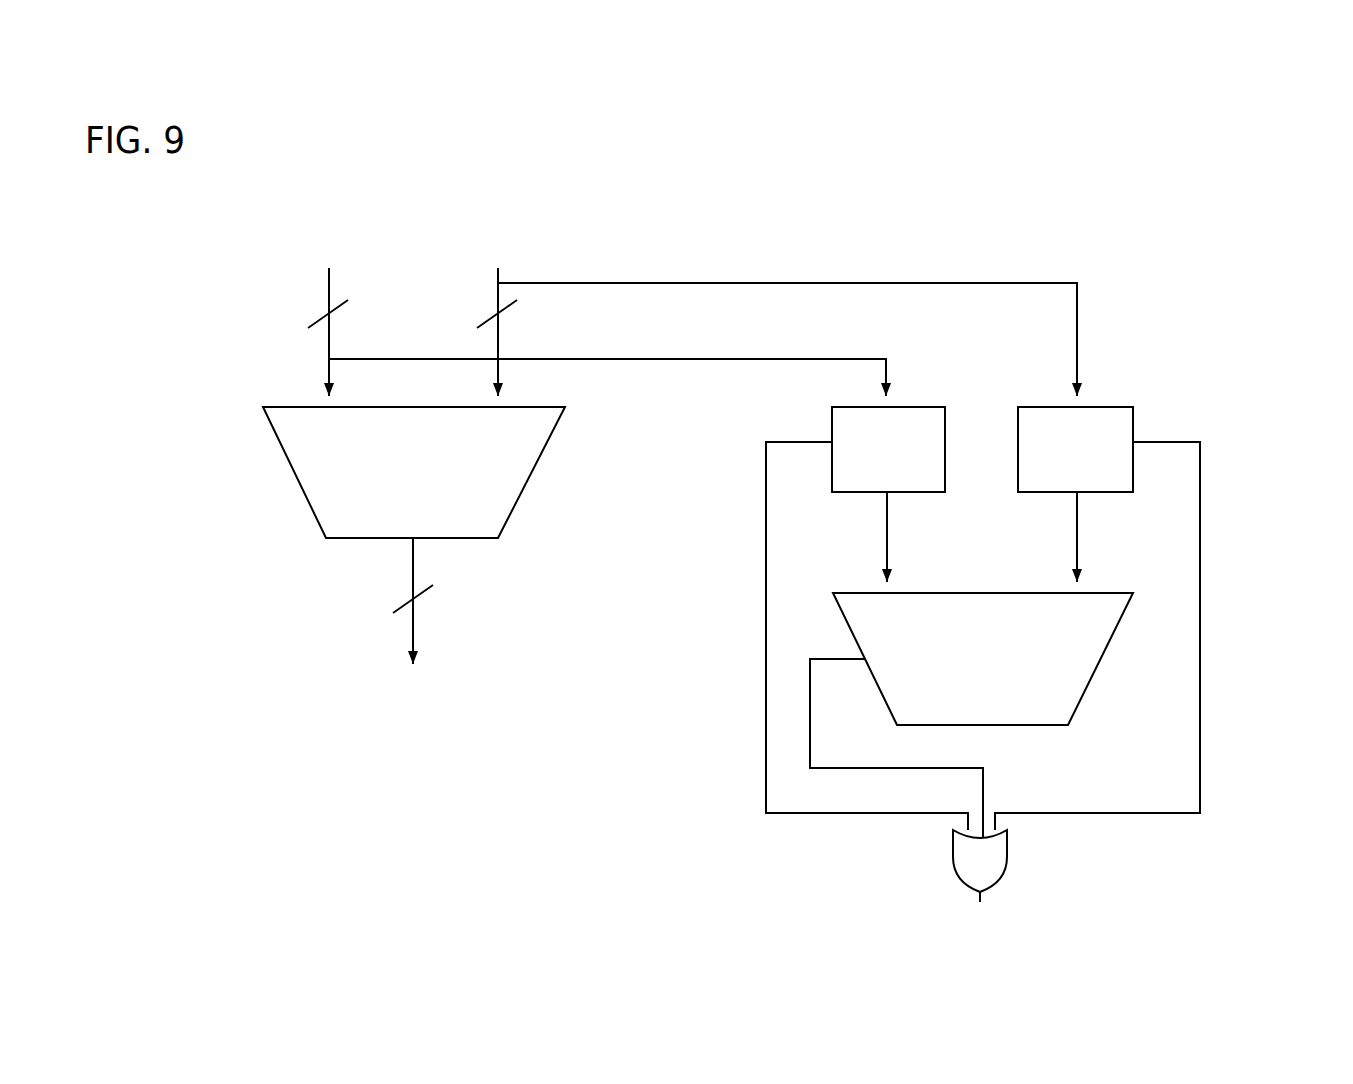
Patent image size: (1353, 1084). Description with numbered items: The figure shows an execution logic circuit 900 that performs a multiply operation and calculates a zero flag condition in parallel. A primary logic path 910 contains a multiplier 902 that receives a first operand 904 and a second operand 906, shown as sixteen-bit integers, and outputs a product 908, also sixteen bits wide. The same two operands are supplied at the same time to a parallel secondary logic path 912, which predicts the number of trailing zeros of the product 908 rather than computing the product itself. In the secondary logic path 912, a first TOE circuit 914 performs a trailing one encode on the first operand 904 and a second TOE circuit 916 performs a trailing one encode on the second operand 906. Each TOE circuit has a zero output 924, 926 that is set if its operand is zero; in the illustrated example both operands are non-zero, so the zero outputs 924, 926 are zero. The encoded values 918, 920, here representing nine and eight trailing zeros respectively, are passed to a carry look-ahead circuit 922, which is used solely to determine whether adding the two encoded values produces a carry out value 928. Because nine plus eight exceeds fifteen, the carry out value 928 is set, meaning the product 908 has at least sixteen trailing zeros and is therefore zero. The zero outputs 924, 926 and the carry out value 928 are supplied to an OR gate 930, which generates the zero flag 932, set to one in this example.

The execution logic circuit 900 is at (1232, 143).
The multiplier 902 is at (528, 485).
The first operand 904 is at (329, 300).
The second operand 906 is at (498, 300).
The product 908 is at (413, 642).
The primary logic path 910 is at (427, 170).
The secondary logic path 912 is at (993, 188).
The first TOE circuit 914 is at (917, 407).
The second TOE circuit 916 is at (1112, 407).
The encoded value 918 is at (887, 550).
The encoded value 920 is at (1077, 550).
The carry look-ahead circuit 922 is at (1095, 670).
The zero output 924 is at (766, 490).
The zero output 926 is at (1200, 480).
The carry out value 928 is at (810, 730).
The OR gate 930 is at (1010, 863).
The zero flag 932 is at (980, 900).